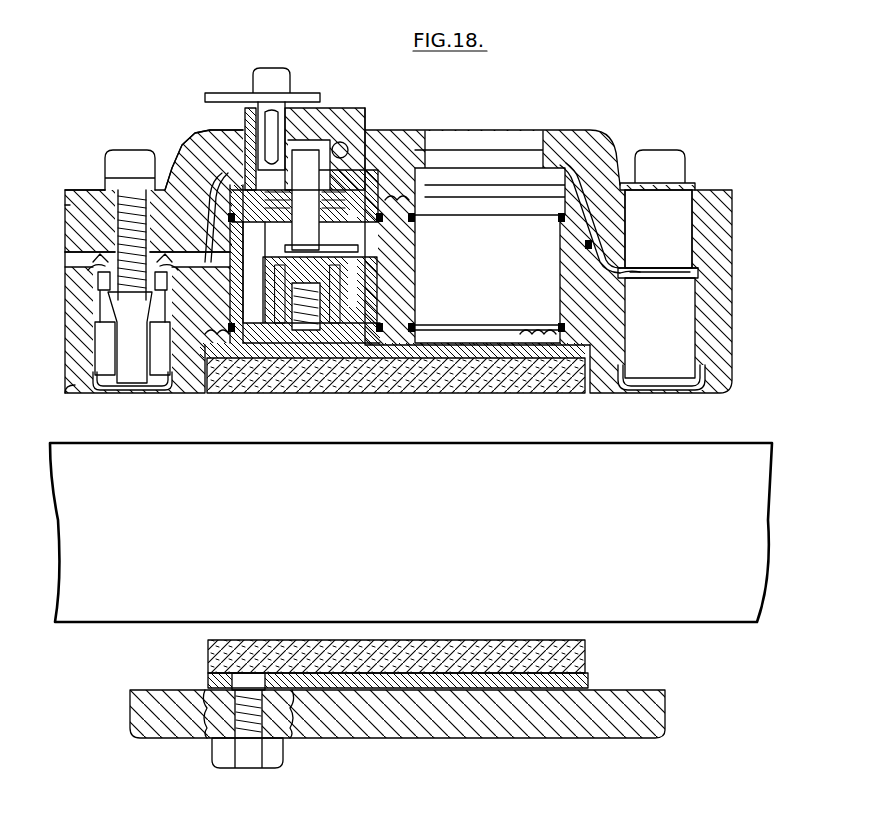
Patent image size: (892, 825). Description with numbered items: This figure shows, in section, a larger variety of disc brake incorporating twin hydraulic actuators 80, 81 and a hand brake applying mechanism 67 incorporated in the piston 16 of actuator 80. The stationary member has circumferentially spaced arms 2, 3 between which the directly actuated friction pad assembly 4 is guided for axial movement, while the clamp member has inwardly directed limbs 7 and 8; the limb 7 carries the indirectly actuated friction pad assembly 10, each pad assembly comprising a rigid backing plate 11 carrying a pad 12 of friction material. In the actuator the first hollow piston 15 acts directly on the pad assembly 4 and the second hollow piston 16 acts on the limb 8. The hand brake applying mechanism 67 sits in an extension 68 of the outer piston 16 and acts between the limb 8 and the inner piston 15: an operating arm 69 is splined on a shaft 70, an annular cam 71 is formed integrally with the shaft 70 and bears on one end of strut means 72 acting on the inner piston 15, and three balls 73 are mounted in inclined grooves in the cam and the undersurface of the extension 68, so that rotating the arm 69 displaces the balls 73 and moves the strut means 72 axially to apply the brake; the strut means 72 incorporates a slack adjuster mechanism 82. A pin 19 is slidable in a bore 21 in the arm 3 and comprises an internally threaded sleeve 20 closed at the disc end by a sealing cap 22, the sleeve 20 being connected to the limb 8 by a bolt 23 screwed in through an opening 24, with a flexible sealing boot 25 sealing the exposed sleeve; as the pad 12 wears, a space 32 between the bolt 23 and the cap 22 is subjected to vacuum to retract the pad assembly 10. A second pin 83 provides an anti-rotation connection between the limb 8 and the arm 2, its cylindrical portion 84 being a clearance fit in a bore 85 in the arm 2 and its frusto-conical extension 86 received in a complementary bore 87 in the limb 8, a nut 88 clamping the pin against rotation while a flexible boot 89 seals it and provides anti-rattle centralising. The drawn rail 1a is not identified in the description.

The rail 1a is at (80, 607).
The arm 2 is at (718, 380).
The arm 3 is at (80, 377).
The directly actuated friction pad assembly 4 is at (256, 374).
The limb 7 is at (167, 717).
The limb 8 is at (570, 140).
The indirectly actuated friction pad assembly 10 is at (245, 670).
The rigid backing plate 11 is at (588, 682).
The pad 12 is at (586, 646).
The first hollow piston 15 is at (226, 308).
The second hollow piston 16 is at (236, 230).
The pin 19 is at (106, 285).
The internally threaded sleeve 20 is at (72, 243).
The bore 21 is at (113, 290).
The sealing cap 22 is at (117, 390).
The bolt 23 is at (128, 203).
The opening 24 is at (72, 207).
The flexible sealing boot 25 is at (92, 268).
The space 32 is at (159, 379).
The hand brake applying mechanism 67 is at (250, 140).
The extension 68 is at (350, 135).
The operating arm 69 is at (232, 93).
The shaft 70 is at (273, 104).
The annular cam 71 is at (360, 158).
The strut means 72 is at (404, 236).
The balls 73 is at (347, 156).
The hydraulic actuator 80 is at (200, 157).
The hydraulic actuator 81 is at (512, 228).
The slack adjuster mechanism 82 is at (308, 320).
The second pin 83 is at (700, 272).
The cylindrical portion 84 is at (675, 330).
The bore 85 is at (700, 357).
The frusto-conical extension 86 is at (668, 242).
The bore 87 is at (700, 207).
The nut 88 is at (668, 160).
The flexible boot 89 is at (690, 258).